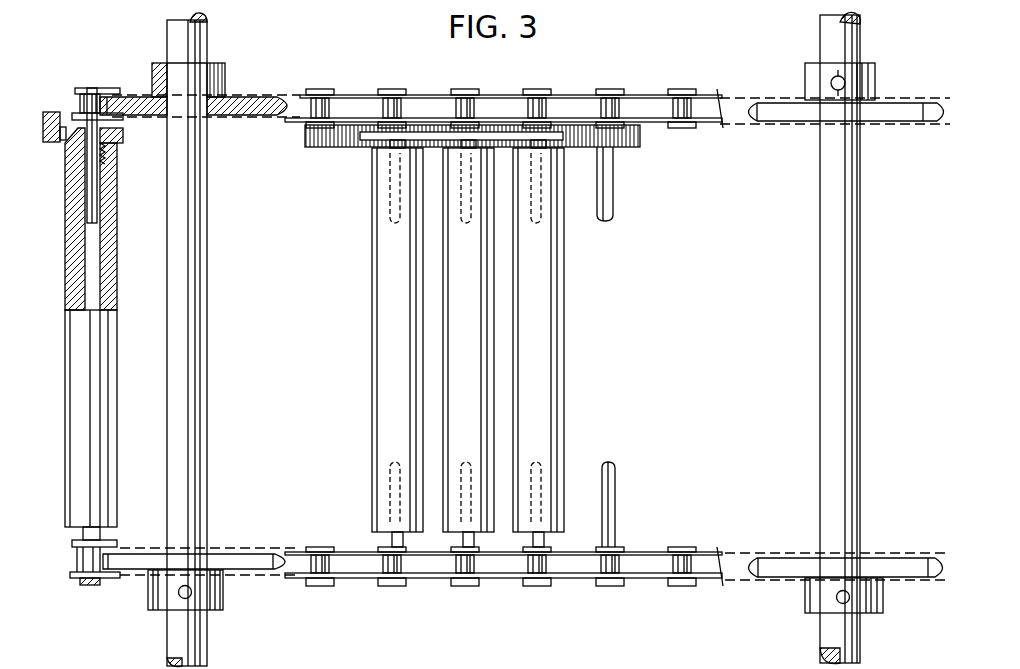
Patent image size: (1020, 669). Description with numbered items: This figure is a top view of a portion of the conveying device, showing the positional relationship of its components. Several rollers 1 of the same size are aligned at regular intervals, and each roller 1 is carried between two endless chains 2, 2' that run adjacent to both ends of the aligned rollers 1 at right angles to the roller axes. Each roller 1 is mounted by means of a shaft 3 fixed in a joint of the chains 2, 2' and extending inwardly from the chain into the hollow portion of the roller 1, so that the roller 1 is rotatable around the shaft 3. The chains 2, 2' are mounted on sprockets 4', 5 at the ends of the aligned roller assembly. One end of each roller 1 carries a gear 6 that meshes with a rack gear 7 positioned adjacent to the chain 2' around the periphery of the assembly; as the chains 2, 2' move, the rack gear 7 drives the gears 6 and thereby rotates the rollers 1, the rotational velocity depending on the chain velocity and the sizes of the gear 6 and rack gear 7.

The roller 1 is at (100, 348).
The endless chain 2 is at (504, 548).
The endless chain 2' is at (504, 137).
The shaft 3 is at (97, 197).
The sprocket 4' is at (523, 541).
The sprocket 5 is at (255, 104).
The gear 6 is at (115, 131).
The rack gear 7 is at (48, 110).